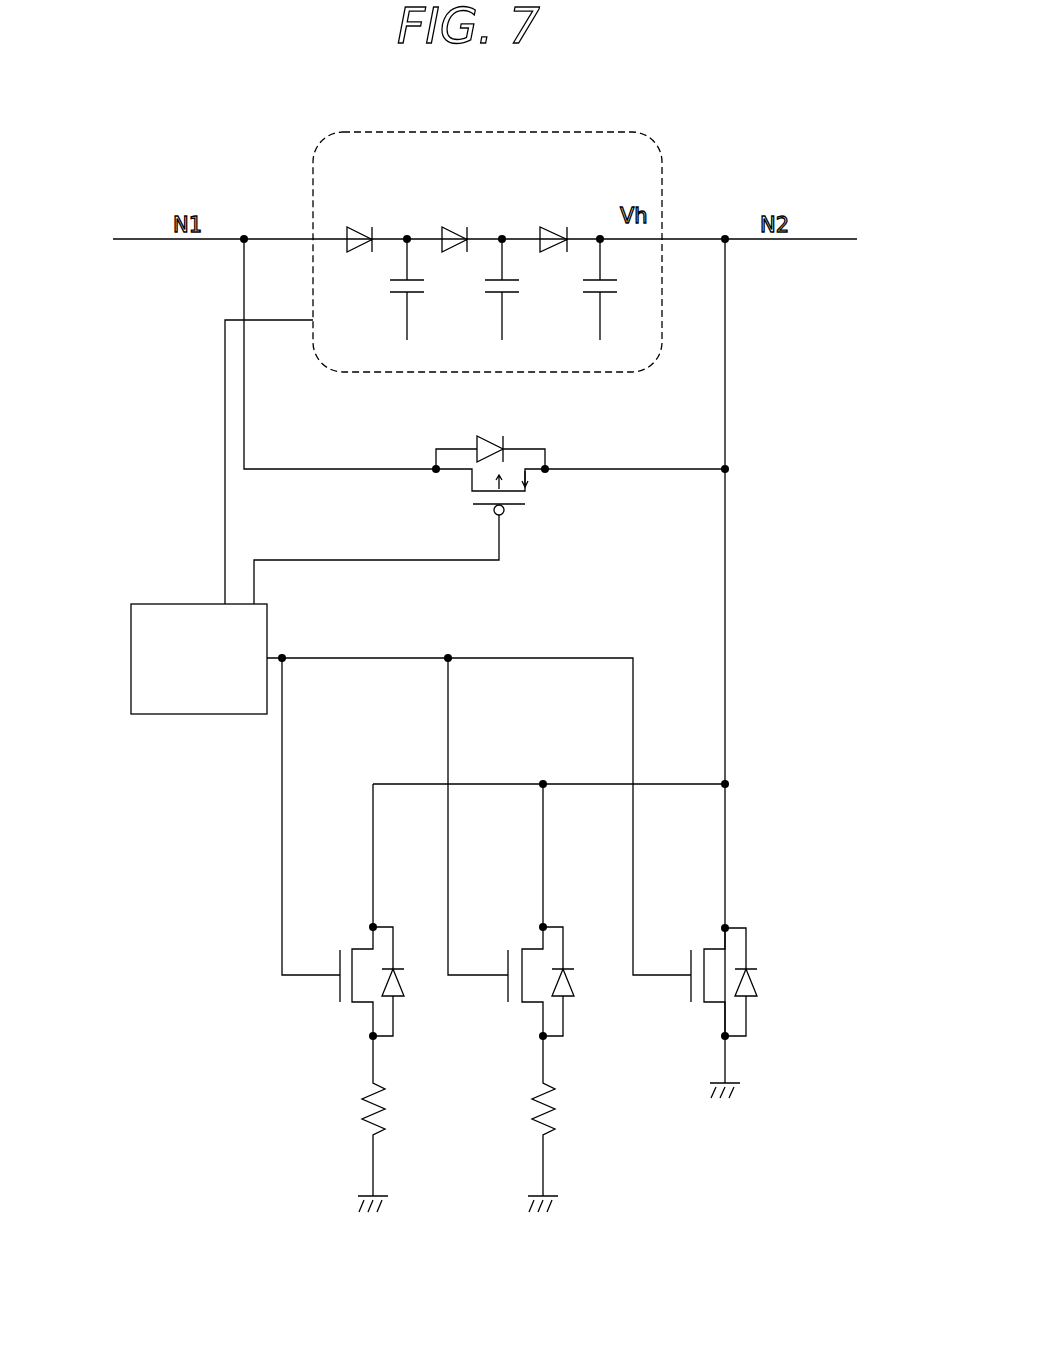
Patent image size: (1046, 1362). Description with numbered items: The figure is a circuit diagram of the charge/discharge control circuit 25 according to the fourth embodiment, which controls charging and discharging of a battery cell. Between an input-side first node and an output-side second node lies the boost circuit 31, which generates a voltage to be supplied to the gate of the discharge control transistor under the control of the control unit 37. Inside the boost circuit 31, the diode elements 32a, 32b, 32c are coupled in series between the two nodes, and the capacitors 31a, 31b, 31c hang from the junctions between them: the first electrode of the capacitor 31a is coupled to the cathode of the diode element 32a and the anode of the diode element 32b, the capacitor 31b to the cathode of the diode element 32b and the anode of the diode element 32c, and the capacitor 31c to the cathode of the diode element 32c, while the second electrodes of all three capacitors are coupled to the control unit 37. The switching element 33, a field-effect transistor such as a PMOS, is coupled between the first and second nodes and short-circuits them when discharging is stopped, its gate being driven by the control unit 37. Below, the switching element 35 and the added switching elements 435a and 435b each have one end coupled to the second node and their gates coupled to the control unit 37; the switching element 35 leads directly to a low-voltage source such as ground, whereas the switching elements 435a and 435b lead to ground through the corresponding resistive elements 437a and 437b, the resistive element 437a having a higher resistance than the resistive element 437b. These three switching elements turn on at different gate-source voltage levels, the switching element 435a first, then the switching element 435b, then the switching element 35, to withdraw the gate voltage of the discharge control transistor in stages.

The charge/discharge control circuit 25 is at (718, 116).
The boost circuit 31 is at (562, 131).
The capacitor 31a is at (390, 287).
The capacitor 31b is at (485, 287).
The capacitor 31c is at (583, 287).
The diode element 32a is at (357, 229).
The diode element 32b is at (452, 229).
The diode element 32c is at (548, 229).
The switching element 33 is at (563, 441).
The switching element 35 is at (768, 964).
The control unit 37 is at (131, 660).
The switching element 435a is at (412, 989).
The switching element 435b is at (582, 989).
The resistive element 437a is at (392, 1113).
The resistive element 437b is at (564, 1113).